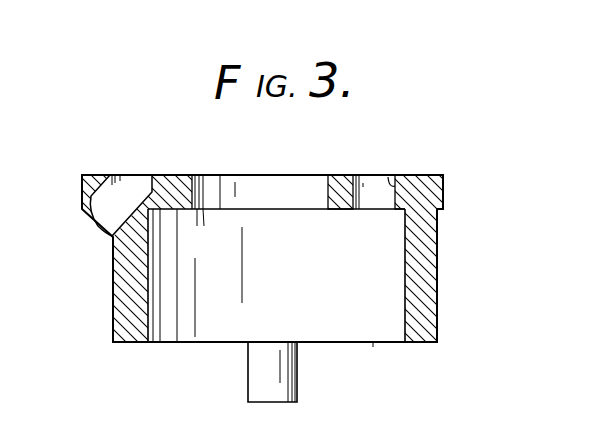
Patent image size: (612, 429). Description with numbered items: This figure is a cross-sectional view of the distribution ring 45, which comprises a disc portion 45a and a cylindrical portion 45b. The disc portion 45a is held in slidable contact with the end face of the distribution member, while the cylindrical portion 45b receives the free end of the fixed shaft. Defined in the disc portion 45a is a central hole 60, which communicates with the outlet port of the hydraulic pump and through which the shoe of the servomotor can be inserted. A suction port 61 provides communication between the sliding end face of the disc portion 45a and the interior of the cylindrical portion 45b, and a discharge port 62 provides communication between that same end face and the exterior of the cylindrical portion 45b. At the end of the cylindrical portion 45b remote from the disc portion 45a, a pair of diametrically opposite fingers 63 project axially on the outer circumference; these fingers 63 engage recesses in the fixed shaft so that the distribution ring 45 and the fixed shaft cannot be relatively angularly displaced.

The distribution ring 45 is at (139, 155).
The disc portion 45a is at (436, 175).
The cylindrical portion 45b is at (441, 263).
The central hole 60 is at (204, 212).
The suction port 61 is at (387, 177).
The discharge port 62 is at (105, 220).
The fingers 63 is at (297, 370).